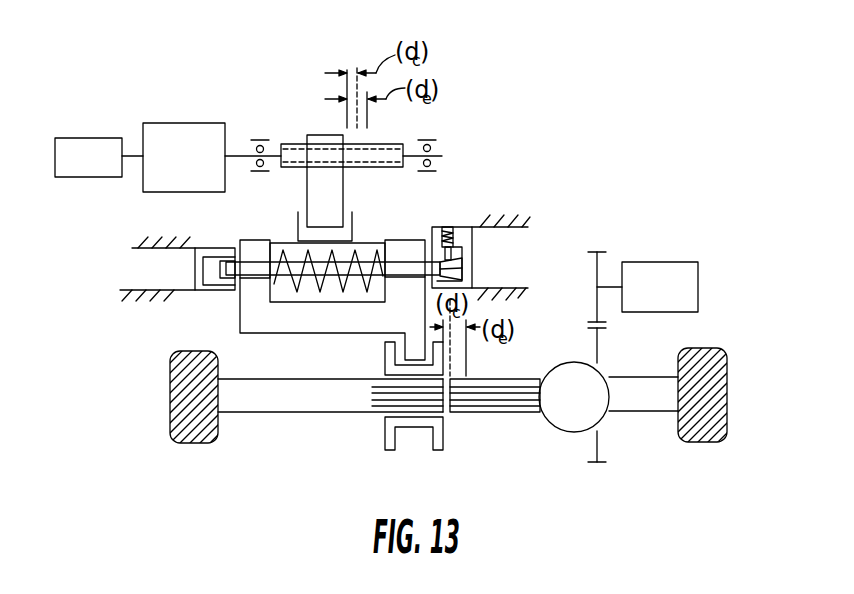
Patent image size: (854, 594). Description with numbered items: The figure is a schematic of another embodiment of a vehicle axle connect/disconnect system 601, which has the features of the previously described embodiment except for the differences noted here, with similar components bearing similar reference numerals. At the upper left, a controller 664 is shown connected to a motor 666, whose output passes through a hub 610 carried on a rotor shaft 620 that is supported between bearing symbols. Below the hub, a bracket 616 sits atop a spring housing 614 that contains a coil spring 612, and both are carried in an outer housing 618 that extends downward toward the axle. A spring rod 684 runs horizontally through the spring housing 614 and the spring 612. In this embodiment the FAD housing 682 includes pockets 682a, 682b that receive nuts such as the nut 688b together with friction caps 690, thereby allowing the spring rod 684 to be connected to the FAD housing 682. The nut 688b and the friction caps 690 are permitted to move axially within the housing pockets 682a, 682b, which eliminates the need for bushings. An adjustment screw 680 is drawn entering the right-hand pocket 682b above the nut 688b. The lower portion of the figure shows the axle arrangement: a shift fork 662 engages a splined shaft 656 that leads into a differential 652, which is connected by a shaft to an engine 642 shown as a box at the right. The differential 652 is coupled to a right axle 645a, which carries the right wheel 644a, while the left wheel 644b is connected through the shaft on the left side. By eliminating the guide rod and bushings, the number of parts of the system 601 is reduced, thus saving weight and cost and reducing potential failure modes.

The connect/disconnect system 601 is at (586, 88).
The controller 664 is at (88, 138).
The motor 666 is at (184, 123).
The hub 610 is at (306, 134).
The rotor shaft 620 is at (372, 143).
The spring housing 614 is at (282, 242).
The spring 612 is at (295, 283).
The bracket 616 is at (357, 238).
The housing 618 is at (303, 335).
The spring rod 684 is at (390, 261).
The nut 688b is at (462, 268).
The adjustment screw 680 is at (456, 228).
The pocket 682a is at (210, 247).
The pocket 682b is at (478, 222).
The FAD housing 682 is at (514, 300).
The friction cap 690 is at (216, 284).
The shift fork 662 is at (388, 426).
The splined shaft 656 is at (500, 413).
The differential 652 is at (595, 414).
The engine 642 is at (699, 287).
The right axle 645a is at (625, 413).
The right wheel 644a is at (720, 442).
The left wheel 644b is at (186, 443).